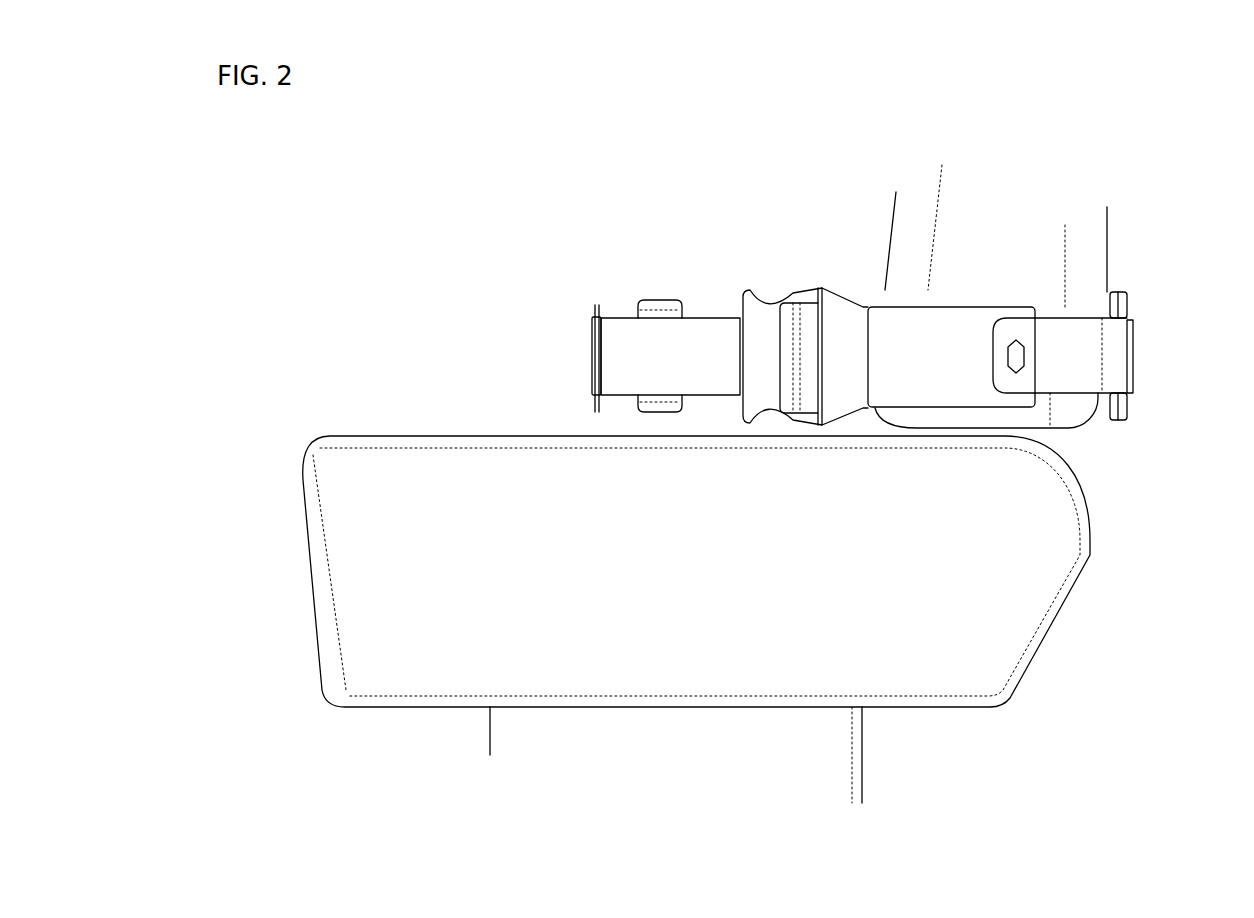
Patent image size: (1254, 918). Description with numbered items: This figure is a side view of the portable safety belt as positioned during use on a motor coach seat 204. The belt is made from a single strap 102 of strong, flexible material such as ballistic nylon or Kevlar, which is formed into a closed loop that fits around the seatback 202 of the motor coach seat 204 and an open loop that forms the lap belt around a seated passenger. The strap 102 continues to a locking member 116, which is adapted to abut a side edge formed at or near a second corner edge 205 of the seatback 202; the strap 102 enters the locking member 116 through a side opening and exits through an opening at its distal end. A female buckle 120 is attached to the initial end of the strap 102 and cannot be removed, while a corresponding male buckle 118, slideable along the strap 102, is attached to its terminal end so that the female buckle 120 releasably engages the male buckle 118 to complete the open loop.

The strap 102 is at (625, 352).
The locking member 116 is at (765, 315).
The male buckle 118 is at (597, 307).
The female buckle 120 is at (658, 307).
The seatback 202 is at (1027, 202).
The motor coach seat 204 is at (950, 667).
The second corner edge 205 is at (1092, 429).